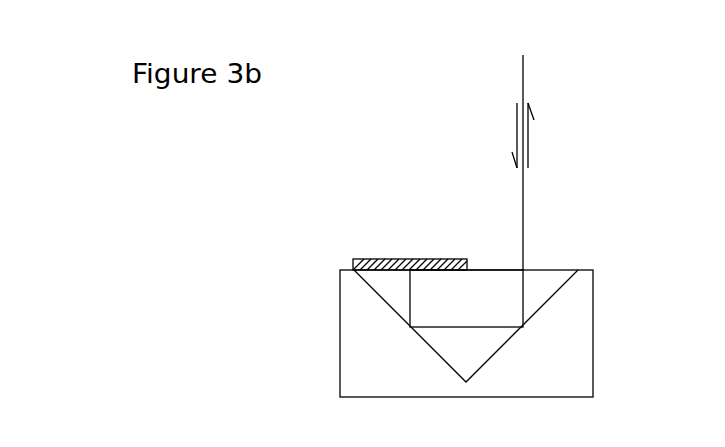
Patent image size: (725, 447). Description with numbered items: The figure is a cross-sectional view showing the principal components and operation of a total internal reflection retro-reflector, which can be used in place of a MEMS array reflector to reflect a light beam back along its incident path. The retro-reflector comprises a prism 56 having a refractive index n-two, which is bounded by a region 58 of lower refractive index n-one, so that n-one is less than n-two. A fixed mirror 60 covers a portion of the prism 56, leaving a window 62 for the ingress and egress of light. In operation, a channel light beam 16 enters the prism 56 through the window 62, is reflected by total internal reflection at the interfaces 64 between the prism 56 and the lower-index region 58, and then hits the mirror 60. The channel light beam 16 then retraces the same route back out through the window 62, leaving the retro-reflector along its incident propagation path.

The channel light beam 16 is at (523, 217).
The prism 56 is at (550, 280).
The region of lower refractive index 58 is at (350, 315).
The fixed mirror 60 is at (375, 262).
The window 62 is at (508, 257).
The n2/n1 interfaces 64 is at (414, 336).